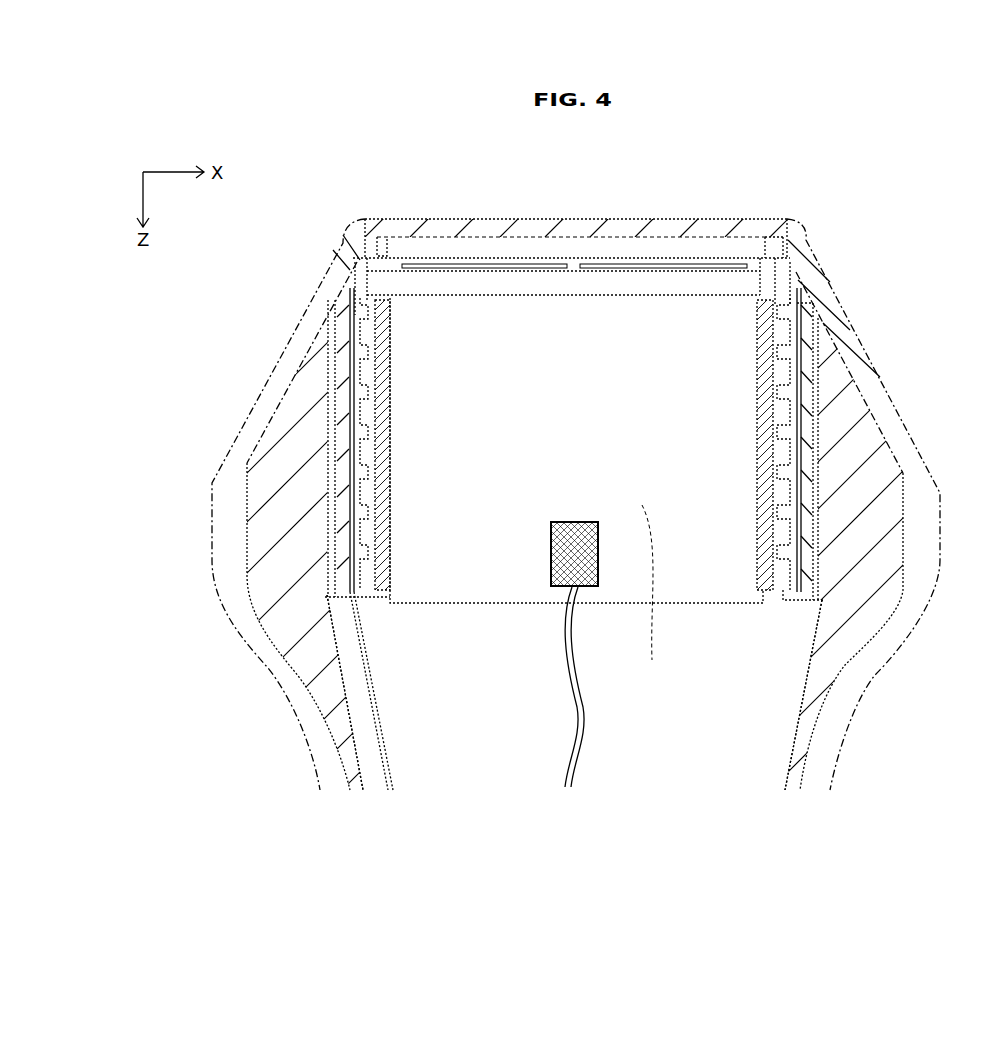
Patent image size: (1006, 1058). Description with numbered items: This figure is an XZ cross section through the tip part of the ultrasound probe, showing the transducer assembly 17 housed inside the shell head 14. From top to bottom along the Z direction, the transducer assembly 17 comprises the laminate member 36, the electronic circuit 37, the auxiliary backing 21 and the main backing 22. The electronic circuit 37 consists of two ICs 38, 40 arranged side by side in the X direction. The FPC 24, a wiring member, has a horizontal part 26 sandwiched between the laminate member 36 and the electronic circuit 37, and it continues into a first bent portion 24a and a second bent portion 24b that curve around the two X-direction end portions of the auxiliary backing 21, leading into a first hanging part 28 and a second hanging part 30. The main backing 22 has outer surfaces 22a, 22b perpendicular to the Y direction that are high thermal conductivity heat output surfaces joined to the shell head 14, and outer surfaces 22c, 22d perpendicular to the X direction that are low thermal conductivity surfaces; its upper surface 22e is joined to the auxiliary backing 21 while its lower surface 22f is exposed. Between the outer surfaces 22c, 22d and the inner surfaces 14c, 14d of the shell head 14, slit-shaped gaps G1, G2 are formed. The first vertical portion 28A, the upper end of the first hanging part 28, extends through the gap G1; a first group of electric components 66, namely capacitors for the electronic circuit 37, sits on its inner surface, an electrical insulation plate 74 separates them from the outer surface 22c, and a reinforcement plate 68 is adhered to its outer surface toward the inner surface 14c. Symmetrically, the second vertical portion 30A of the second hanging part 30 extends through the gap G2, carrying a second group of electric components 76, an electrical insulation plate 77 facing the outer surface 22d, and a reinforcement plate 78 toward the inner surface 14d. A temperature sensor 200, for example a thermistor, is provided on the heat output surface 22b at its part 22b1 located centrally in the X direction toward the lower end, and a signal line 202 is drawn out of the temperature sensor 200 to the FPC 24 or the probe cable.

The shell head 14 is at (905, 545).
The inner surface of the shell head 14c is at (805, 368).
The inner surface of the shell head 14d is at (326, 360).
The transducer assembly 17 is at (697, 628).
The auxiliary backing 21 is at (415, 275).
The main backing 22 is at (740, 490).
The outer surface of the main backing 22a is at (658, 597).
The outer surface of the main backing 22b is at (462, 510).
The part of the outer surface 22b1 is at (615, 583).
The outer surface of the main backing 22c is at (785, 398).
The outer surface of the main backing 22d is at (390, 495).
The upper surface of the main backing 22e is at (700, 295).
The lower surface of the main backing 22f is at (430, 603).
The FPC 24 is at (554, 250).
The first bent portion 24a is at (790, 245).
The second bent portion 24b is at (360, 258).
The horizontal part 26 is at (472, 258).
The first hanging part 28 is at (787, 660).
The first vertical portion 28A is at (800, 445).
The second hanging part 30 is at (368, 690).
The second vertical portion 30A is at (352, 442).
The laminate member 36 is at (668, 237).
The electronic circuit 37 is at (528, 248).
The IC 38 is at (630, 266).
The IC 40 is at (503, 270).
The first group of electric components 66 is at (790, 588).
The reinforcement plate 68 is at (815, 555).
The electrical insulation plate 74 is at (765, 590).
The second group of electric components 76 is at (368, 592).
The electrical insulation plate 77 is at (382, 587).
The reinforcement plate 78 is at (335, 400).
The temperature sensor 200 is at (547, 568).
The signal line 202 is at (580, 717).
The gap G1 is at (788, 300).
The gap G2 is at (363, 290).